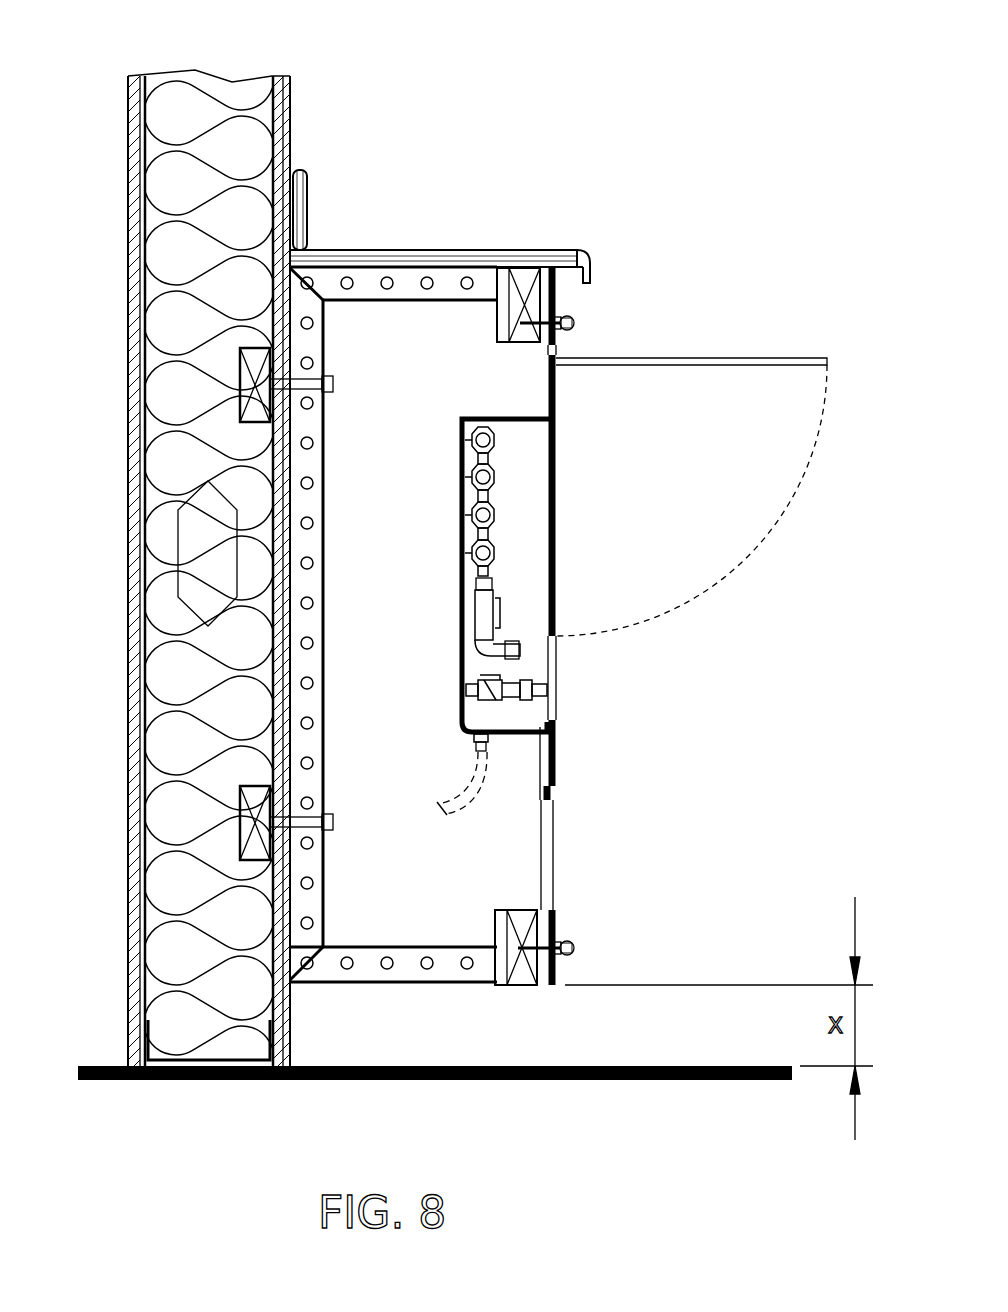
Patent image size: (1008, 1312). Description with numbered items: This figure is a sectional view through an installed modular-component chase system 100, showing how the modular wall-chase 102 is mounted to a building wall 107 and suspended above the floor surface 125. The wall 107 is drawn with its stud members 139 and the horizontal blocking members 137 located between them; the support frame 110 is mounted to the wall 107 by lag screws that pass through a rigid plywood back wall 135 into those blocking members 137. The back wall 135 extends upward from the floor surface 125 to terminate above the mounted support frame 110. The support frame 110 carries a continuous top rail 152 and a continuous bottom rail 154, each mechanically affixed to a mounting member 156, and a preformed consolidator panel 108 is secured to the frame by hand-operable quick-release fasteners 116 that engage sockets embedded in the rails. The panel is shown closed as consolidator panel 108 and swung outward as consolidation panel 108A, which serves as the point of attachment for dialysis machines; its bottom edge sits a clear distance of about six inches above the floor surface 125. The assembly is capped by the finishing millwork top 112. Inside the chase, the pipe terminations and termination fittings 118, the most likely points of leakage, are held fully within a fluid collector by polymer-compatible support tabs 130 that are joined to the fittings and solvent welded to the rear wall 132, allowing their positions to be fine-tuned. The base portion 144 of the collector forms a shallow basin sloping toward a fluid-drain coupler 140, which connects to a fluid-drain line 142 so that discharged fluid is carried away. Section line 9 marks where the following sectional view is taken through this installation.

The modular-component chase system 100 is at (586, 78).
The modular wall-chase 102 is at (695, 43).
The wall 107 is at (128, 146).
The preformed consolidator panel 108 is at (598, 873).
The consolidation panel 108A is at (598, 818).
The support frame 110 is at (447, 982).
The finishing millwork top 112 is at (540, 250).
The quick-release fastener 116 is at (598, 323).
The termination fitting 118 is at (497, 553).
The floor surface 125 is at (475, 1080).
The support tab 130 is at (462, 597).
The rear wall 132 is at (462, 668).
The back wall 135 is at (290, 550).
The horizontal blocking member 137 is at (240, 350).
The stud member 139 is at (240, 83).
The fluid-drain coupler 140 is at (476, 742).
The fluid-drain line 142 is at (445, 815).
The base portion 144 is at (522, 735).
The top rail 152 is at (503, 305).
The bottom rail 154 is at (520, 912).
The mounting member 156 is at (500, 338).
The section 9- 9 is at (403, 452).